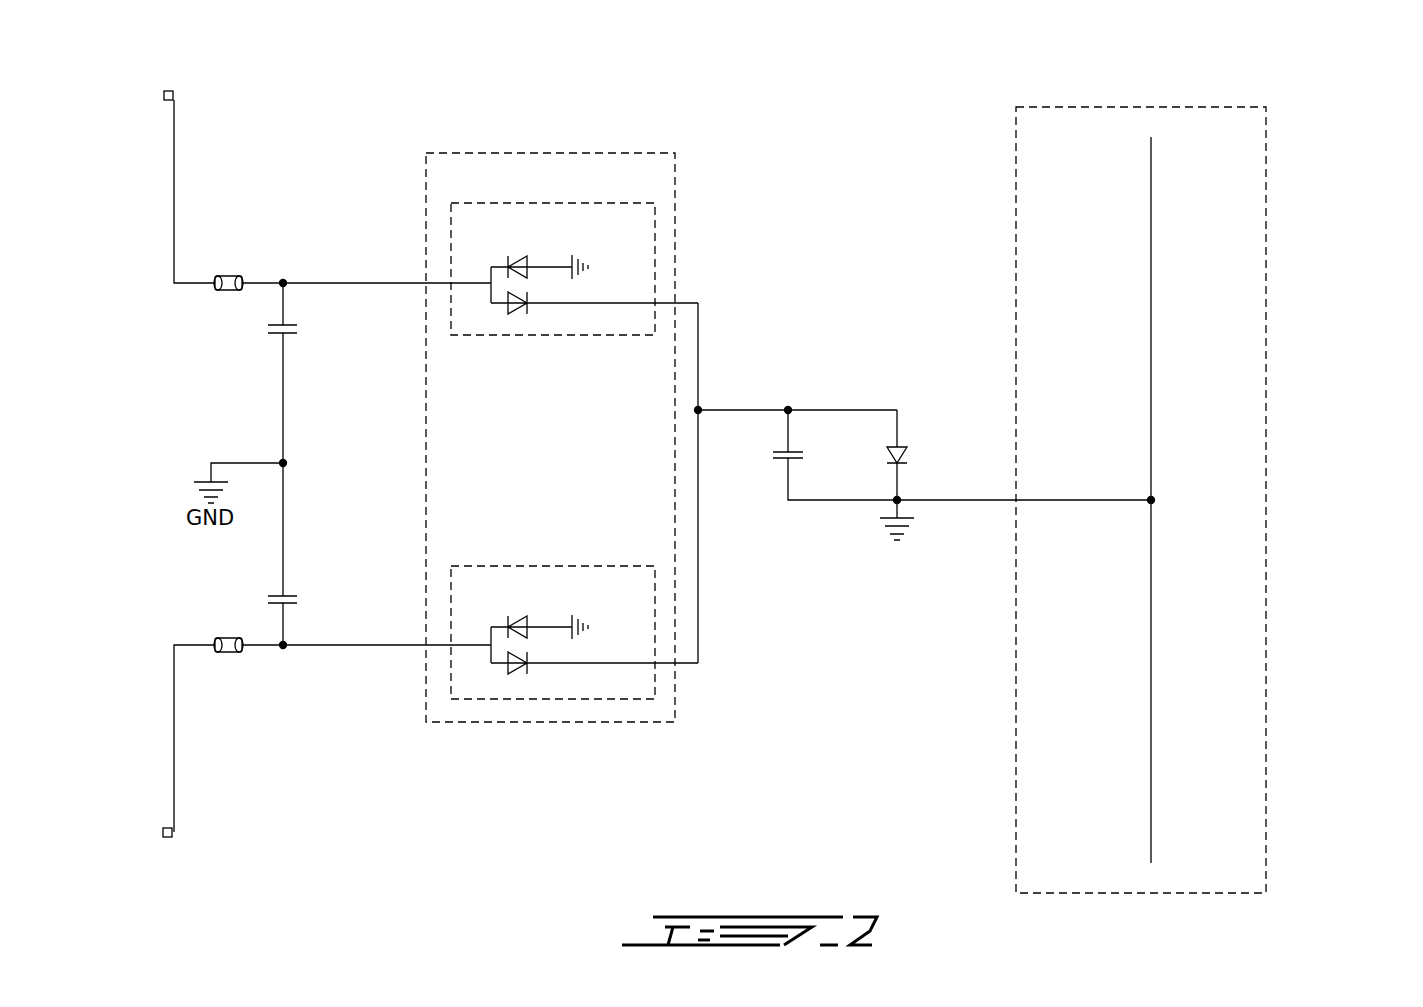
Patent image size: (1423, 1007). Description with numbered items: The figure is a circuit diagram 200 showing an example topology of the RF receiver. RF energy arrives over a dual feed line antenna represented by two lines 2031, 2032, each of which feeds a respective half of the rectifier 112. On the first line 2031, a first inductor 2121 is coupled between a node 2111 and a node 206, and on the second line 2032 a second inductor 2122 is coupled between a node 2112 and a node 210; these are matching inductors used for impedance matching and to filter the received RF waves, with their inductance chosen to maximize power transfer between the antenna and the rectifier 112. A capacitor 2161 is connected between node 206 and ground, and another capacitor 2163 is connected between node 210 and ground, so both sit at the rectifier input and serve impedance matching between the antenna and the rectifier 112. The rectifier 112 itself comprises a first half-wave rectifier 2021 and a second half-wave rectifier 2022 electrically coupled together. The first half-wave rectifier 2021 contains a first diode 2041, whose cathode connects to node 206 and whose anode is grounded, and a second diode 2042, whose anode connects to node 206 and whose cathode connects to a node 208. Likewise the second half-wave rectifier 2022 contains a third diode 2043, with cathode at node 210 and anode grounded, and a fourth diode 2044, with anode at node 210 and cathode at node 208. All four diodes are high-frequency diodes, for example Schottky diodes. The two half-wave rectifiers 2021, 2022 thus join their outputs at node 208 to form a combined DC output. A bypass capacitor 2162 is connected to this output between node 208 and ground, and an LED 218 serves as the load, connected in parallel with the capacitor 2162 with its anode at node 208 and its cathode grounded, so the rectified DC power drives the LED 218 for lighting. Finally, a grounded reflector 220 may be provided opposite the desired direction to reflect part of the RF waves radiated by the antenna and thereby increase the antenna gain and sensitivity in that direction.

The circuit diagram 200 is at (1312, 127).
The rectifier 112 is at (552, 153).
The first half-wave rectifier 2021 is at (580, 203).
The second half-wave rectifier 2022 is at (580, 566).
The first diode 2041 is at (516, 258).
The second diode 2042 is at (516, 312).
The third diode 2043 is at (516, 618).
The fourth diode 2044 is at (516, 675).
The node 206 is at (283, 280).
The node 208 is at (700, 408).
The node 210 is at (285, 649).
The node 2111 is at (169, 90).
The node 2112 is at (173, 836).
The first inductor 2121 is at (215, 292).
The second inductor 2122 is at (227, 656).
The line 2031 is at (174, 183).
The line 2032 is at (174, 779).
The capacitor 2161 is at (291, 334).
The capacitor 2162 is at (778, 460).
The capacitor 2163 is at (291, 601).
The LED 218 is at (890, 457).
The grounded reflector 220 is at (1144, 107).